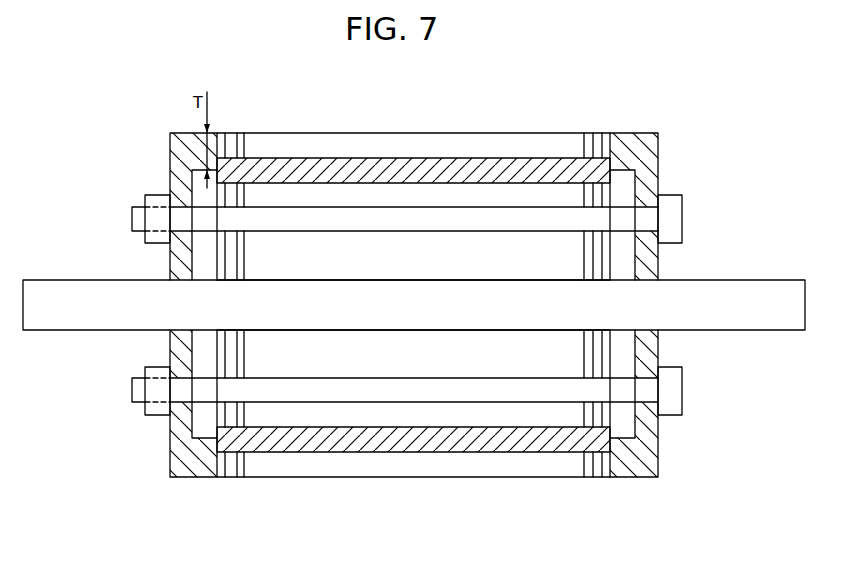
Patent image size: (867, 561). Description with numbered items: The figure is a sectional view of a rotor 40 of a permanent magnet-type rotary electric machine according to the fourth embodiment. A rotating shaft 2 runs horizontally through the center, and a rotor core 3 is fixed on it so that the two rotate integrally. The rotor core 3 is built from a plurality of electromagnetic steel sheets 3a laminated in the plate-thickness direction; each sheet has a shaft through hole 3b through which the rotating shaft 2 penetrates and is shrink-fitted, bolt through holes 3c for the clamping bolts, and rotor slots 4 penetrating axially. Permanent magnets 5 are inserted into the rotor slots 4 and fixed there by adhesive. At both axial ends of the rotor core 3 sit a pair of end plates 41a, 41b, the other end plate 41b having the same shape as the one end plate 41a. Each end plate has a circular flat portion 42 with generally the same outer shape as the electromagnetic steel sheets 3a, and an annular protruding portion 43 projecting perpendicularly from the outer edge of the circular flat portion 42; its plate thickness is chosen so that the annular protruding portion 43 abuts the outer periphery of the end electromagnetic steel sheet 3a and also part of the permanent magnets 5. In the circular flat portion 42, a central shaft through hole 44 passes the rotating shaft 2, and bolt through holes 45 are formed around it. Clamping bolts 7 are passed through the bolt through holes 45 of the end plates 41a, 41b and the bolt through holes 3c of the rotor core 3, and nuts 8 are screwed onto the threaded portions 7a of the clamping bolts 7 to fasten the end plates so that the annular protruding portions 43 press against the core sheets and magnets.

The rotating shaft 2 is at (768, 297).
The rotor core 3 is at (285, 143).
The electromagnetic steel sheets 3a is at (236, 133).
The shaft through hole 3b is at (537, 283).
The bolt through holes 3c is at (366, 206).
The rotor slots 4 is at (497, 157).
The permanent magnets 5 is at (331, 165).
The clamping bolts 7 is at (683, 219).
The threaded portions 7a is at (132, 218).
The nuts 8 is at (153, 242).
The rotor 40 is at (655, 92).
The end plate 41a is at (165, 131).
The end plate 41b is at (662, 131).
The circular flat portion 42 is at (170, 164).
The annular protruding portion 43 is at (184, 143).
The shaft through hole 44 is at (184, 342).
The bolt through holes 45 is at (170, 212).